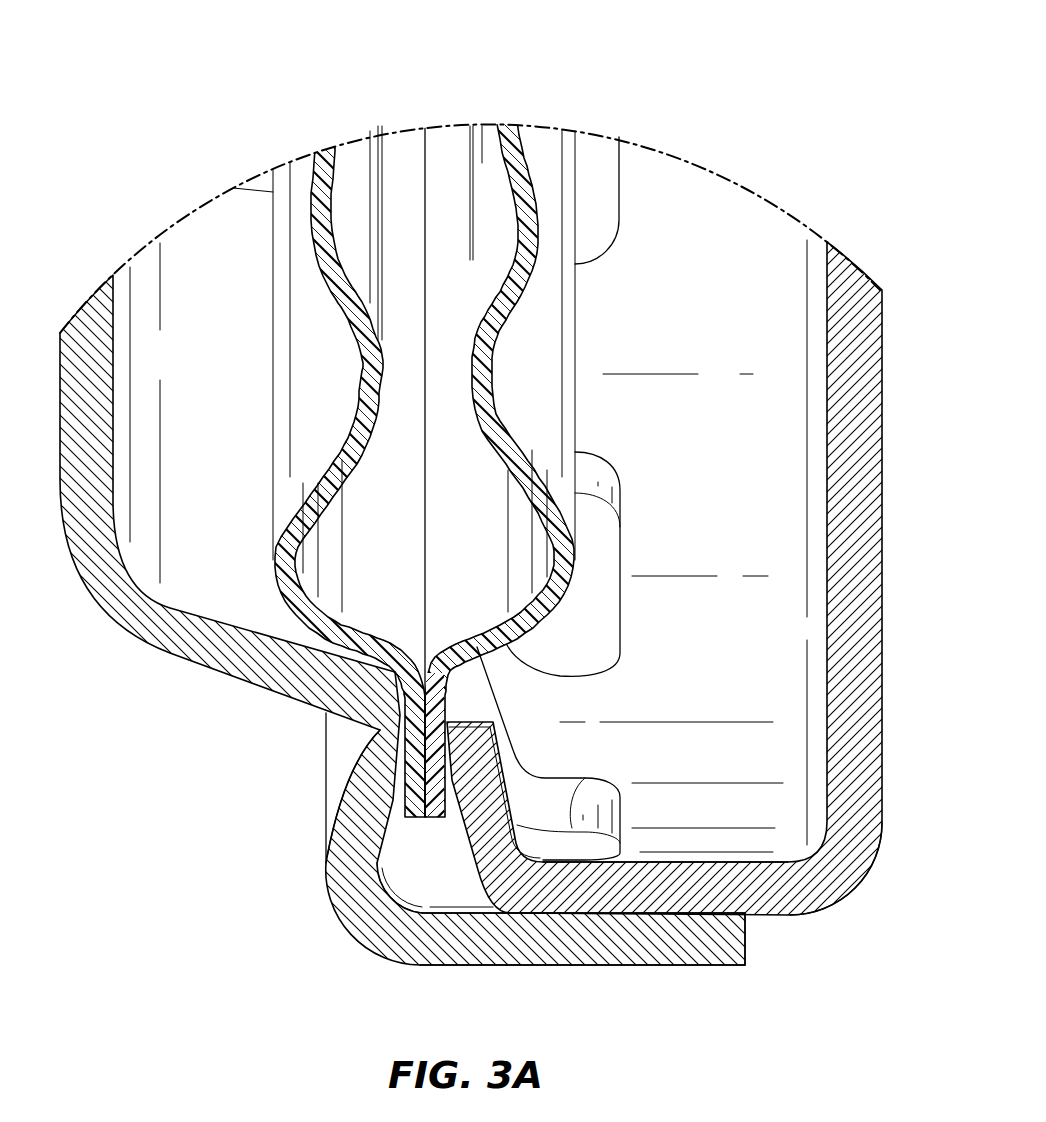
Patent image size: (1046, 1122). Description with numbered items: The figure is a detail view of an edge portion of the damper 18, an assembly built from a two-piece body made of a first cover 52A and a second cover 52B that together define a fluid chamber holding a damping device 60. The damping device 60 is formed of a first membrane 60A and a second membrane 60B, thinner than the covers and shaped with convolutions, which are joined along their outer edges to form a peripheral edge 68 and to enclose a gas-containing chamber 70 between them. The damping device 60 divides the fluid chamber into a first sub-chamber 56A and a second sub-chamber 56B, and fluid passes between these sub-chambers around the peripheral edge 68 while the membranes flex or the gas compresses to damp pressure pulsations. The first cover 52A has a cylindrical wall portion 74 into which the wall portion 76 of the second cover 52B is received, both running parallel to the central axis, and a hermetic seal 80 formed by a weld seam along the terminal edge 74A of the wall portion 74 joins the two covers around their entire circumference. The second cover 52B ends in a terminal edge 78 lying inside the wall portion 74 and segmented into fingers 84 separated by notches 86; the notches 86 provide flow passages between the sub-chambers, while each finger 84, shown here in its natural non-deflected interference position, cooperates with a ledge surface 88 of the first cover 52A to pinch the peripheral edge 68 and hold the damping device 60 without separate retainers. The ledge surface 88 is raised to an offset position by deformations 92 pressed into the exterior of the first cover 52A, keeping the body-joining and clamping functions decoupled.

The damper 18 is at (150, 183).
The gas-containing chamber 70 is at (405, 198).
The damping device 60 is at (523, 418).
The first membrane 60A is at (350, 293).
The second membrane 60B is at (530, 245).
The first cover 52A is at (103, 578).
The second cover 52B is at (858, 345).
The first sub-chamber 56A is at (201, 376).
The second sub-chamber 56B is at (671, 491).
The notches 86 is at (622, 548).
The ledge surface 88 is at (418, 735).
The wall portion of second cover 76 is at (716, 883).
The deformations 92 is at (375, 725).
The peripheral edge 68 is at (417, 820).
The terminal edge of second cover 78 is at (457, 800).
The finger 84 is at (483, 800).
The wall portion of first cover 74 is at (614, 948).
The terminal edge of wall portion 74A is at (745, 970).
The hermetic seal 80 is at (748, 918).